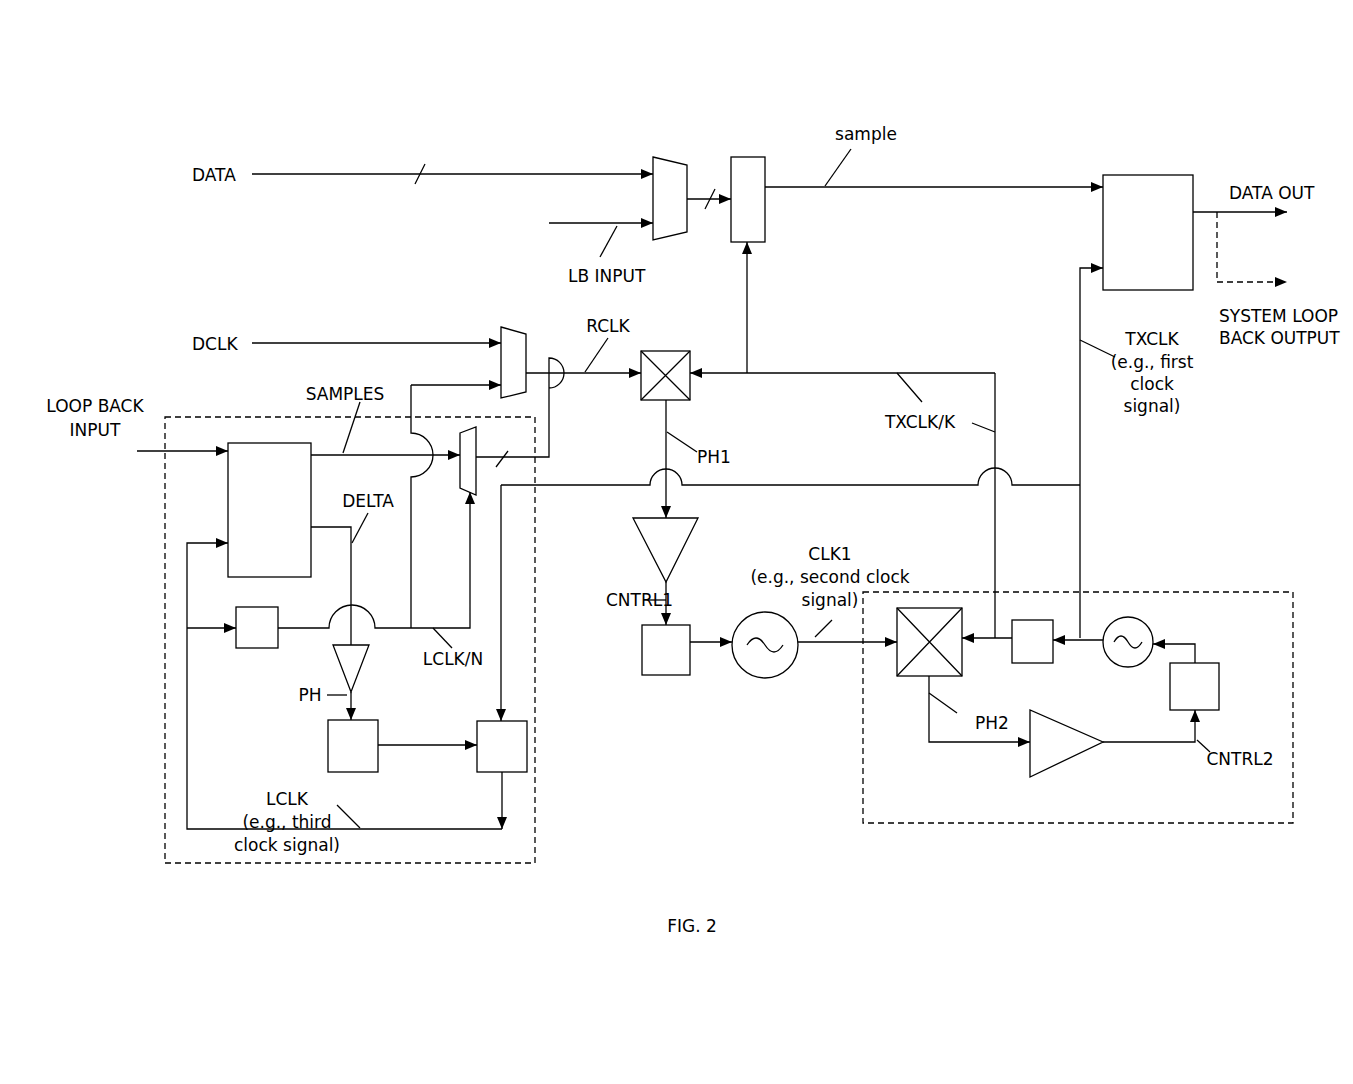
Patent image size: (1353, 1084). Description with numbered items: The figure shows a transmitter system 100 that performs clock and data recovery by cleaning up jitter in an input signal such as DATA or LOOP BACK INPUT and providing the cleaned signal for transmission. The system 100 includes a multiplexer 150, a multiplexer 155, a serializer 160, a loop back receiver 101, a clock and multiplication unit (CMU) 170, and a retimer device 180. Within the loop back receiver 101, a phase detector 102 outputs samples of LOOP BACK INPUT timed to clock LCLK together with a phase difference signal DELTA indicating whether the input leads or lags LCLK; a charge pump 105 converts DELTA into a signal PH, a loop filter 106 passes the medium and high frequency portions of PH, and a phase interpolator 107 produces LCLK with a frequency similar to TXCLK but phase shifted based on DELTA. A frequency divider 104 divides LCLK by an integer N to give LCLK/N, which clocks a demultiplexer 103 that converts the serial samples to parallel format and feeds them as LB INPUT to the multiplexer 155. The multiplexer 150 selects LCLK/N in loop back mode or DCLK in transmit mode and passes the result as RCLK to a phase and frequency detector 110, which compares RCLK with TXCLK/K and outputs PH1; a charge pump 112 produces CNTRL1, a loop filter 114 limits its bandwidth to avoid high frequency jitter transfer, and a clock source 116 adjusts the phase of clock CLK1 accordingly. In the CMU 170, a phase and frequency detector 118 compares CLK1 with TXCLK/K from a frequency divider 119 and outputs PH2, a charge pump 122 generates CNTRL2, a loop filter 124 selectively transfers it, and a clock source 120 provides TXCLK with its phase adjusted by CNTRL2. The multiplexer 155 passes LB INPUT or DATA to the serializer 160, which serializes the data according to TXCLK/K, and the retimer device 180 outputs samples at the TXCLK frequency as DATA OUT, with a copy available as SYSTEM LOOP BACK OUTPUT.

The transmitter system 100 is at (1244, 131).
The loop back receiver 101 is at (536, 803).
The phase detector 102 is at (269, 510).
The demultiplexer 103 is at (458, 475).
The frequency divider 104 is at (253, 650).
The charge pump 105 is at (353, 653).
The loop filter 106 is at (327, 748).
The phase interpolator 107 is at (485, 733).
The phase and frequency detector (PFD) 110 is at (683, 383).
The charge pump 112 is at (637, 545).
The loop filter 114 is at (658, 645).
The clock source 116 is at (753, 673).
The phase and frequency detector (PFD) 118 is at (922, 607).
The frequency divider 119 is at (1023, 618).
The clock source 120 is at (1125, 617).
The charge pump 122 is at (1062, 747).
The loop filter 124 is at (1195, 688).
The multiplexer 150 is at (509, 327).
The multiplexer 155 is at (667, 157).
The serializer 160 is at (742, 157).
The clock and multiplication unit (CMU) 170 is at (1262, 600).
The retimer device 180 is at (1148, 232).